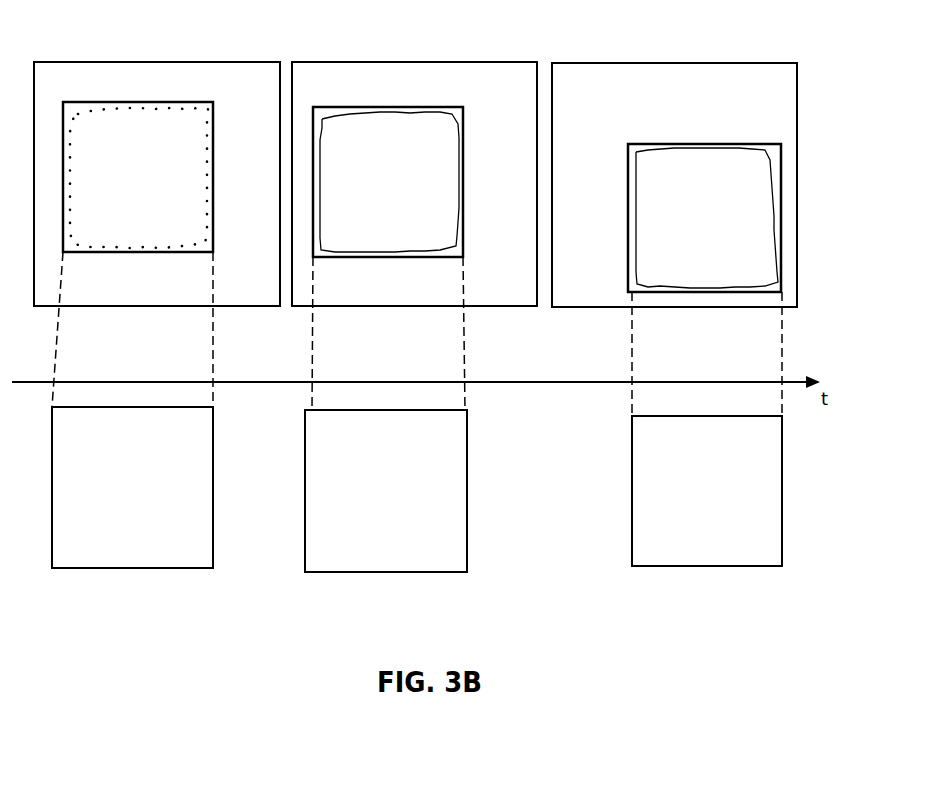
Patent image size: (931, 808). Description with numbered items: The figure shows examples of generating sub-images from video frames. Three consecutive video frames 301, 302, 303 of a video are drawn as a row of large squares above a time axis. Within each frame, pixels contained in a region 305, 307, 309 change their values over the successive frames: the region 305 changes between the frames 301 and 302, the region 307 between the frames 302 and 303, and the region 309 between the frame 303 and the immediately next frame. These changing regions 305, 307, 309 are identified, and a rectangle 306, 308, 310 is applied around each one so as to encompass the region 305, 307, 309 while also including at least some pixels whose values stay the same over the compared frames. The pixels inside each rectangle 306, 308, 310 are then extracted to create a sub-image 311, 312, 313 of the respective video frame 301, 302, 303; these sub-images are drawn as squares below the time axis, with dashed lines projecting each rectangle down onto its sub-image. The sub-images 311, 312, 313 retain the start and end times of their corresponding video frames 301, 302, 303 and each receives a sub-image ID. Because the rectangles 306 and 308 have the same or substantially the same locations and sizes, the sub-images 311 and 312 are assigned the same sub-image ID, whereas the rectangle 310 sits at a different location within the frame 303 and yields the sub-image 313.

The video frame 301 is at (78, 93).
The video frame 302 is at (339, 93).
The video frame 303 is at (600, 96).
The region 305 is at (169, 108).
The rectangle 306 is at (140, 252).
The region 307 is at (423, 110).
The rectangle 308 is at (380, 257).
The region 309 is at (730, 148).
The rectangle 310 is at (687, 292).
The sub-image 311 is at (93, 443).
The sub-image 312 is at (351, 447).
The sub-image 313 is at (677, 448).